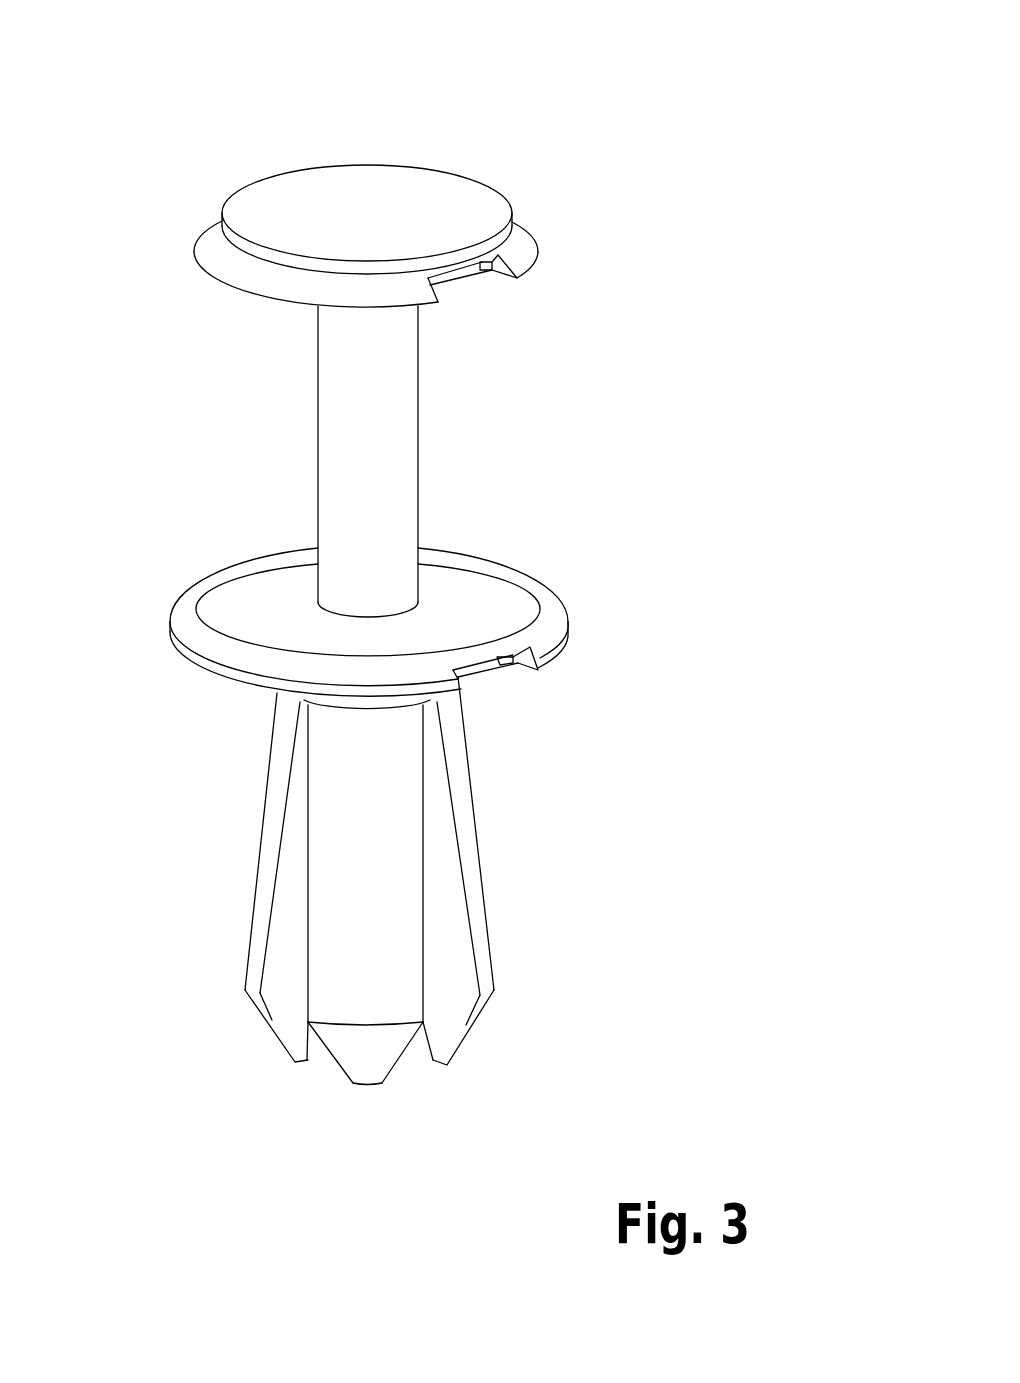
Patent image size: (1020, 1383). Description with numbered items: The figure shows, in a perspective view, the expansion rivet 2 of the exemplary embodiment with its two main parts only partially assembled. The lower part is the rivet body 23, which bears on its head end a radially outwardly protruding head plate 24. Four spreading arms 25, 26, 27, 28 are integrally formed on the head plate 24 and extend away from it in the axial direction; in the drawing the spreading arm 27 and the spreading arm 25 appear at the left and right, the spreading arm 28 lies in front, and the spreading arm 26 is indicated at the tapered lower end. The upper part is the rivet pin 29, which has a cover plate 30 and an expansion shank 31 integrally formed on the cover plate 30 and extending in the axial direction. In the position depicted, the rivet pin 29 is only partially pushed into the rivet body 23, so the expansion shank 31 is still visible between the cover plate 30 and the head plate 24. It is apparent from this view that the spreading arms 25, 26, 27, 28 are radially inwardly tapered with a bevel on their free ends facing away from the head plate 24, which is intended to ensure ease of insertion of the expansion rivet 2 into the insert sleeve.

The expansion rivet 2 is at (502, 132).
The cover plate 30 is at (325, 195).
The rivet pin 29 is at (447, 368).
The expansion shank 31 is at (370, 458).
The head plate 24 is at (500, 602).
The rivet body 23 is at (505, 755).
The spreading arm 27 is at (257, 953).
The spreading arm 25 is at (483, 955).
The spreading arm 26 is at (408, 1058).
The spreading arm 28 is at (367, 985).